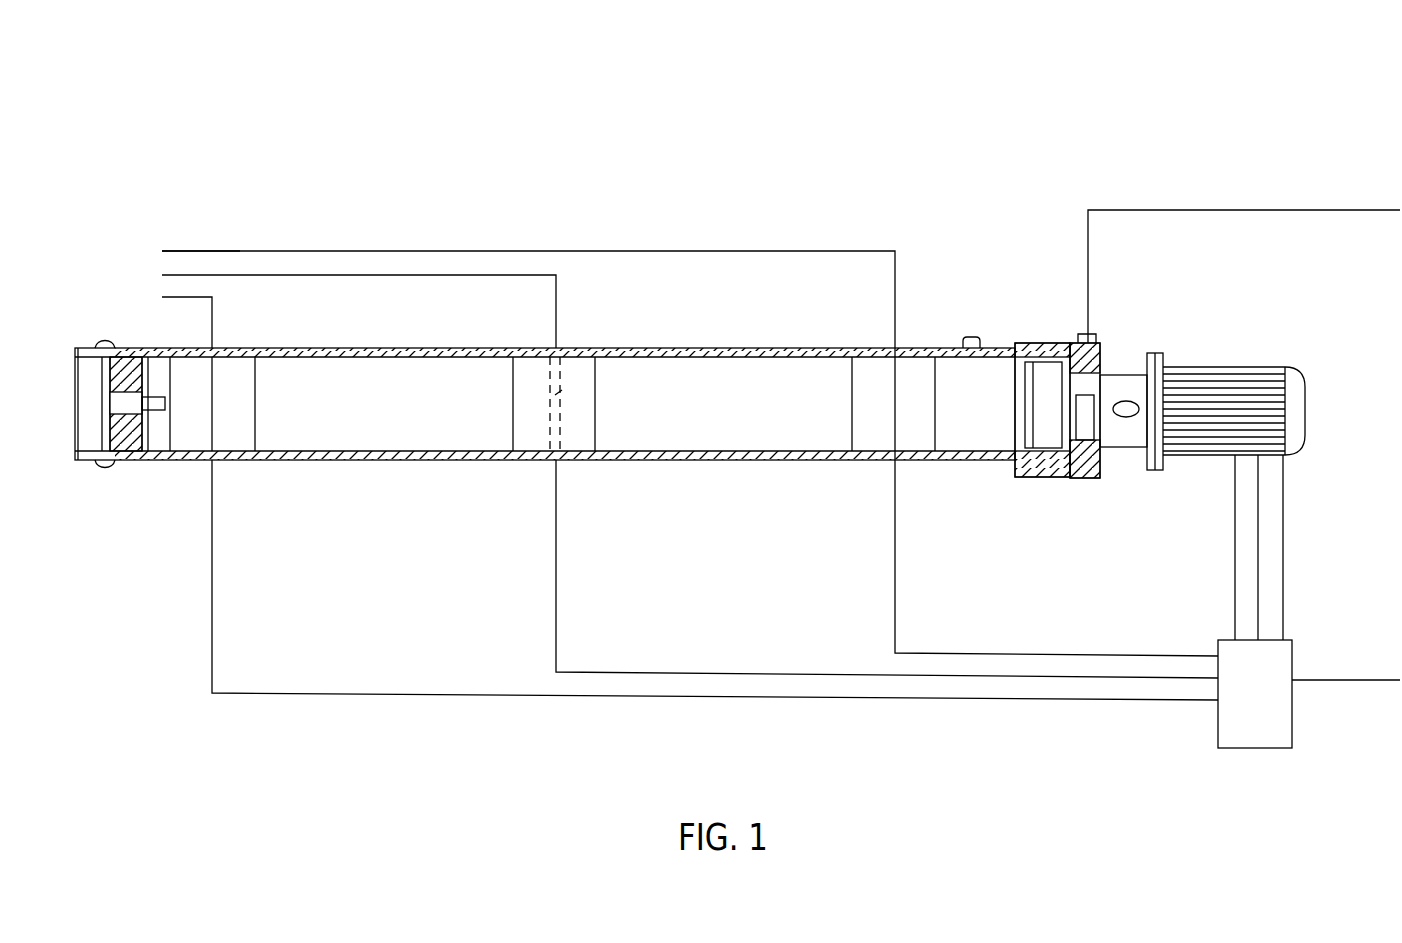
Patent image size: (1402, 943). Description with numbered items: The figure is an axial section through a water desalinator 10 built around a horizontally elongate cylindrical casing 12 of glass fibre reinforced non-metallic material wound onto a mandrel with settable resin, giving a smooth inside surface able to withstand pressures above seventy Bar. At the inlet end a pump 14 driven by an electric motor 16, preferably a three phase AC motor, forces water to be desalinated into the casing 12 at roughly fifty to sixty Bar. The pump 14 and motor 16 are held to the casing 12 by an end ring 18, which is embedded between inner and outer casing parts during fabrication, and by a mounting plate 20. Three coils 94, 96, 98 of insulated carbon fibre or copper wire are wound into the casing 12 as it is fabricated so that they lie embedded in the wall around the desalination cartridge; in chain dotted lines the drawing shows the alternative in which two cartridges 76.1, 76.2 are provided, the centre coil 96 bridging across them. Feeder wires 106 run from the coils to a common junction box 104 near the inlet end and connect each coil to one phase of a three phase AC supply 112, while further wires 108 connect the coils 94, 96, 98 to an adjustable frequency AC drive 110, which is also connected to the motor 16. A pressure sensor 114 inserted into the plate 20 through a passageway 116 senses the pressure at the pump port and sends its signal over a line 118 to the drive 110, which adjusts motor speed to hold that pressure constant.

The water desalinator 10 is at (703, 312).
The casing 12 is at (814, 350).
The pump 14 is at (1147, 352).
The electric motor 16 is at (1200, 460).
The end ring 18 is at (1040, 477).
The mounting plate 20 is at (1090, 478).
The cartridge 76.1 is at (558, 400).
The cartridge 76.2 is at (543, 387).
The coil 94 is at (214, 463).
The coil 96 is at (525, 463).
The coil 98 is at (855, 463).
The junction box 104 is at (966, 340).
The feeder wires 106 is at (215, 316).
The further wires 108 is at (953, 700).
The adjustable frequency AC drive 110 is at (1218, 746).
The three phase AC supply 112 is at (140, 296).
The pressure sensor 114 is at (1086, 338).
The passageway 116 is at (1103, 352).
The line 118 is at (1215, 210).